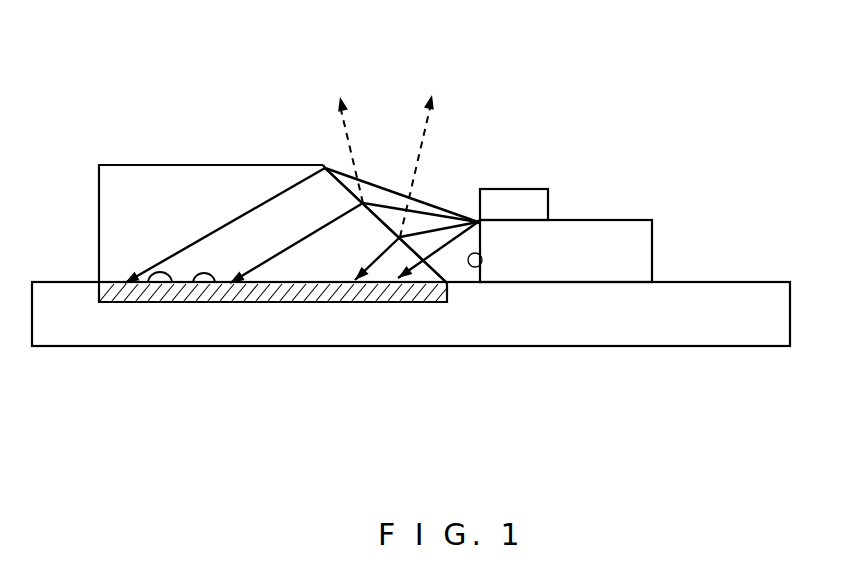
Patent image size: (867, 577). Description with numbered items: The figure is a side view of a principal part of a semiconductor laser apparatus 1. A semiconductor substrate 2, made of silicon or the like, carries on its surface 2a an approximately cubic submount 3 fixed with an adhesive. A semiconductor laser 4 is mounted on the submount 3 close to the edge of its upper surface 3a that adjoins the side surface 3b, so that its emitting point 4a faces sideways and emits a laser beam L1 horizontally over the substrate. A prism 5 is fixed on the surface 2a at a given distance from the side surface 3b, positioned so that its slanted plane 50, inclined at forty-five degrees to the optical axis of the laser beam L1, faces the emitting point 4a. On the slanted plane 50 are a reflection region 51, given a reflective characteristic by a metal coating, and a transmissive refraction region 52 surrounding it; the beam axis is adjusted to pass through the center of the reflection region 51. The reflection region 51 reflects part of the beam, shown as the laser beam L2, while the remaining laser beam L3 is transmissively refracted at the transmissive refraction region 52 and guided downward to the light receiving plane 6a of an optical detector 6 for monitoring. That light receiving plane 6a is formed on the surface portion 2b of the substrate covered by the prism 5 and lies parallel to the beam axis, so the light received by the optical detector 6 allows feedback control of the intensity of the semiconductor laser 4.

The semiconductor laser apparatus 1 is at (676, 110).
The semiconductor substrate 2 is at (411, 314).
The surface 2a is at (768, 281).
The surface portion 2b is at (145, 287).
The submount 3 is at (637, 230).
The upper surface 3a is at (597, 218).
The side surface 3b is at (483, 263).
The semiconductor laser 4 is at (535, 202).
The emitting point 4a is at (478, 222).
The prism 5 is at (228, 165).
The slanted plane 50 is at (323, 165).
The reflection region 51 is at (415, 220).
The transmissive refraction region 52 is at (470, 228).
The optical detector for monitoring 6 is at (285, 308).
The light receiving plane 6a is at (193, 290).
The laser beam L1 is at (538, 370).
The laser beam L2 is at (433, 120).
The laser beam L3 is at (185, 250).